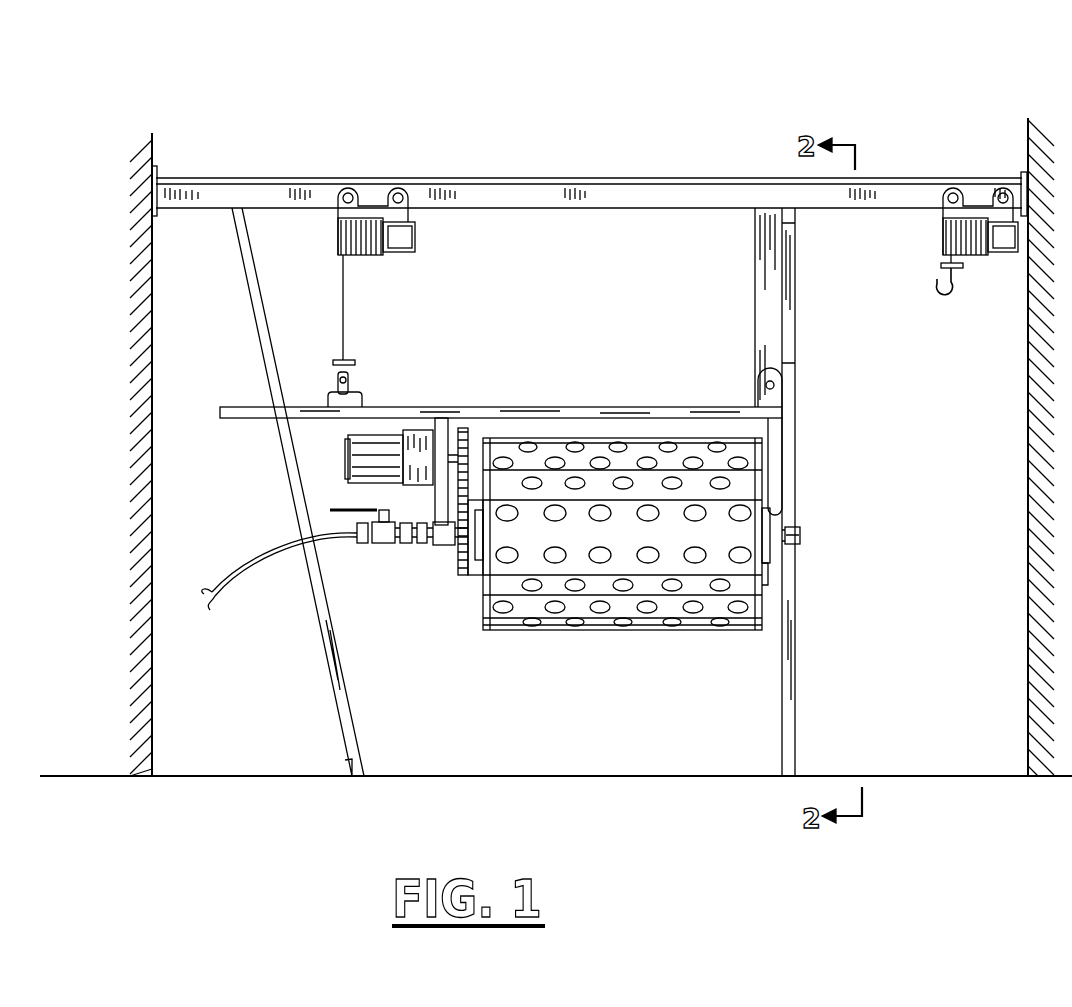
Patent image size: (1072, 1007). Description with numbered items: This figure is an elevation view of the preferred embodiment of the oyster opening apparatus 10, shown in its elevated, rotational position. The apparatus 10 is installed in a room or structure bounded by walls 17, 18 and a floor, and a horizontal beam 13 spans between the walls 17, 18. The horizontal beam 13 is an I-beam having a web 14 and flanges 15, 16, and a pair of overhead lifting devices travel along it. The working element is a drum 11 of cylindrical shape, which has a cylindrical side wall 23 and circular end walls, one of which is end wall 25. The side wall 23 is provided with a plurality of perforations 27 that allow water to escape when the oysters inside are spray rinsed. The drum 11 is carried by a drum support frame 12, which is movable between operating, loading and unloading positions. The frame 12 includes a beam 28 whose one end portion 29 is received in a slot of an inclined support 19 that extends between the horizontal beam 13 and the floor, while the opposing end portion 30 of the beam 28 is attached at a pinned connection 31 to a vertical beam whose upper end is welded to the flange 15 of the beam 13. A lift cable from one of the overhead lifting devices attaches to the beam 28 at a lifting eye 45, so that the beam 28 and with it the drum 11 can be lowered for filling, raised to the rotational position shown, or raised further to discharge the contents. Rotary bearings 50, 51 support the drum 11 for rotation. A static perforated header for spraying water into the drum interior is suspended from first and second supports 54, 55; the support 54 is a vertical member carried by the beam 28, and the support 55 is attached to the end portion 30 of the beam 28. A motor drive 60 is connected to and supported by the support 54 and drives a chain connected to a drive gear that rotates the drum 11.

The oyster opening apparatus 10 is at (910, 131).
The drum 11 is at (622, 564).
The support frame 12 is at (686, 407).
The horizontal beam 13 is at (200, 212).
The web 14 is at (512, 186).
The flange 15 is at (553, 212).
The flange 16 is at (735, 178).
The wall 17 is at (152, 152).
The wall 18 is at (1028, 121).
The inclined support 19 is at (290, 472).
The cylindrical side wall 23 is at (498, 583).
The circular end wall 25 is at (765, 470).
The perforations 27 is at (559, 508).
The beam 28 is at (524, 407).
The end portion 29 is at (242, 407).
The end portion 30 is at (735, 407).
The pinned connection 31 is at (771, 366).
The lifting eye 45 is at (360, 392).
The rotary bearing 50 is at (802, 540).
The rotary bearing 51 is at (455, 545).
The first support 54 is at (440, 420).
The second support 55 is at (786, 494).
The motor drive 60 is at (347, 456).